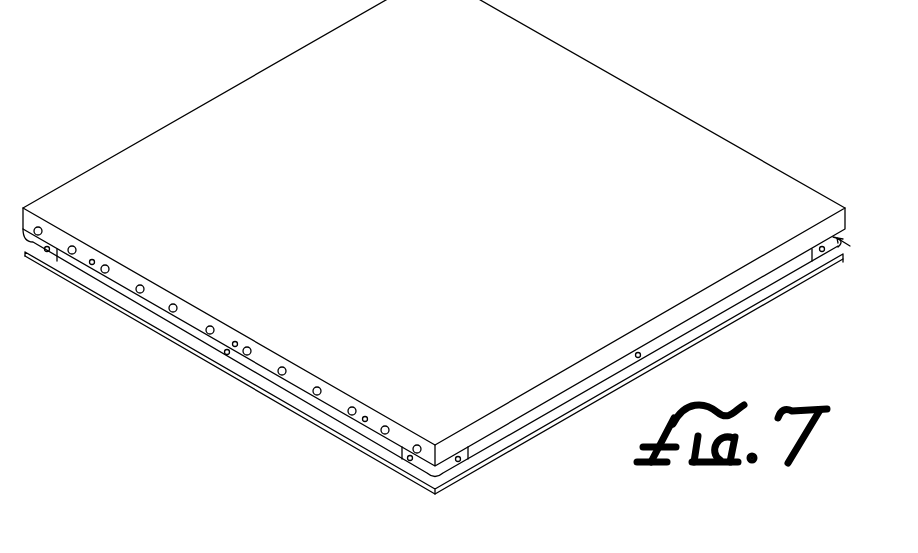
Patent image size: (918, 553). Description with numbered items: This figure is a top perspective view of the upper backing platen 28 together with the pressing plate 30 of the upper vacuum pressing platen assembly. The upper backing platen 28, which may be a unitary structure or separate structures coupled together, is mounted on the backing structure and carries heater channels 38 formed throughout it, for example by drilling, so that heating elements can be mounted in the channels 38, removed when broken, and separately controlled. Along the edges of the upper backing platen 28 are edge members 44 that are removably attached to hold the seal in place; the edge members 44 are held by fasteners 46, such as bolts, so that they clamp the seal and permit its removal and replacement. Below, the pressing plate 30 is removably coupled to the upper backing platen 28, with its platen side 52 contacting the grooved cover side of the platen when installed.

The upper backing platen 28 is at (692, 145).
The pressing plate 30 is at (448, 373).
The heater channels 38 is at (314, 393).
The edge members 44 is at (358, 428).
The fasteners 46 is at (224, 353).
The platen side 52 is at (727, 318).